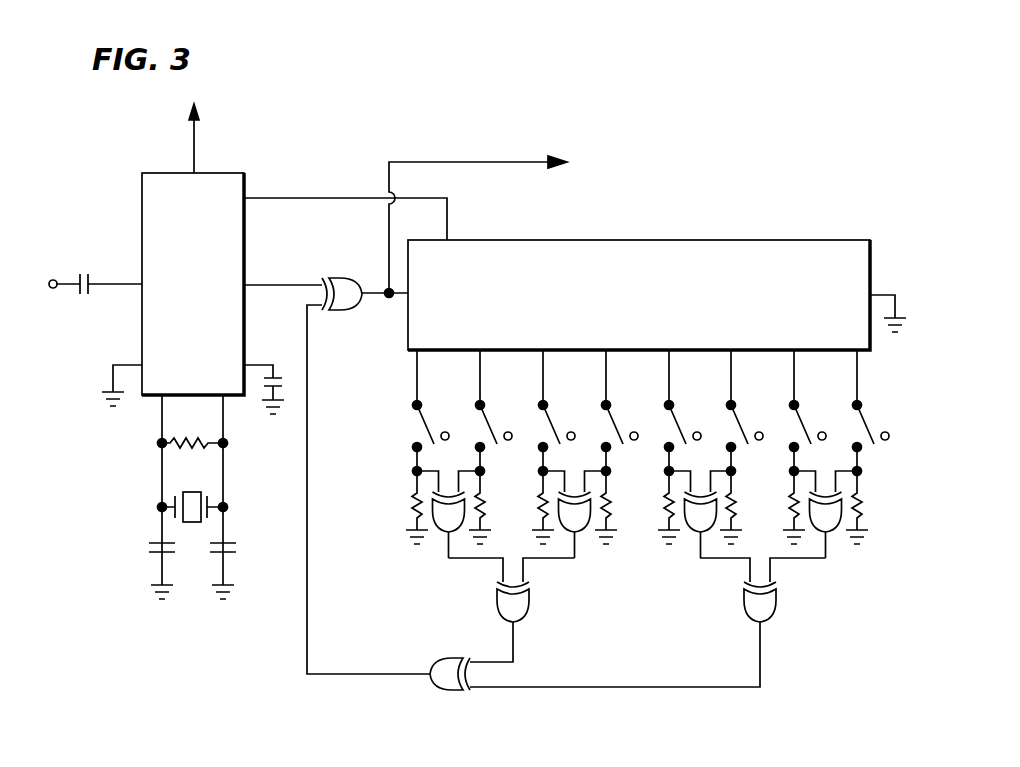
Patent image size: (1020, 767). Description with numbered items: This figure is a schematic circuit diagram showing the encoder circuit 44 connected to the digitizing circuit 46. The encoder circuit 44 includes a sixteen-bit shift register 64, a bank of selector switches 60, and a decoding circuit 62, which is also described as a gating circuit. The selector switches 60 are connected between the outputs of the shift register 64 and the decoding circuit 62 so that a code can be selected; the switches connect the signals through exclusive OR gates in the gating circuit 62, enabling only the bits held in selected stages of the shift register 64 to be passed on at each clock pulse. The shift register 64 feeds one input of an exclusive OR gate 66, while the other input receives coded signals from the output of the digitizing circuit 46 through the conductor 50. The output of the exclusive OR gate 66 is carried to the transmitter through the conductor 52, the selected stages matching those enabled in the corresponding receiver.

The encoder circuit 44 is at (615, 409).
The digitizing circuit 46 is at (243, 173).
The conductor 50 is at (289, 284).
The conductor 52 is at (502, 162).
The selector switches 60 is at (921, 414).
The decoding circuit 62 is at (859, 548).
The shift register 64 is at (808, 255).
The exclusive OR gate 66 is at (348, 312).